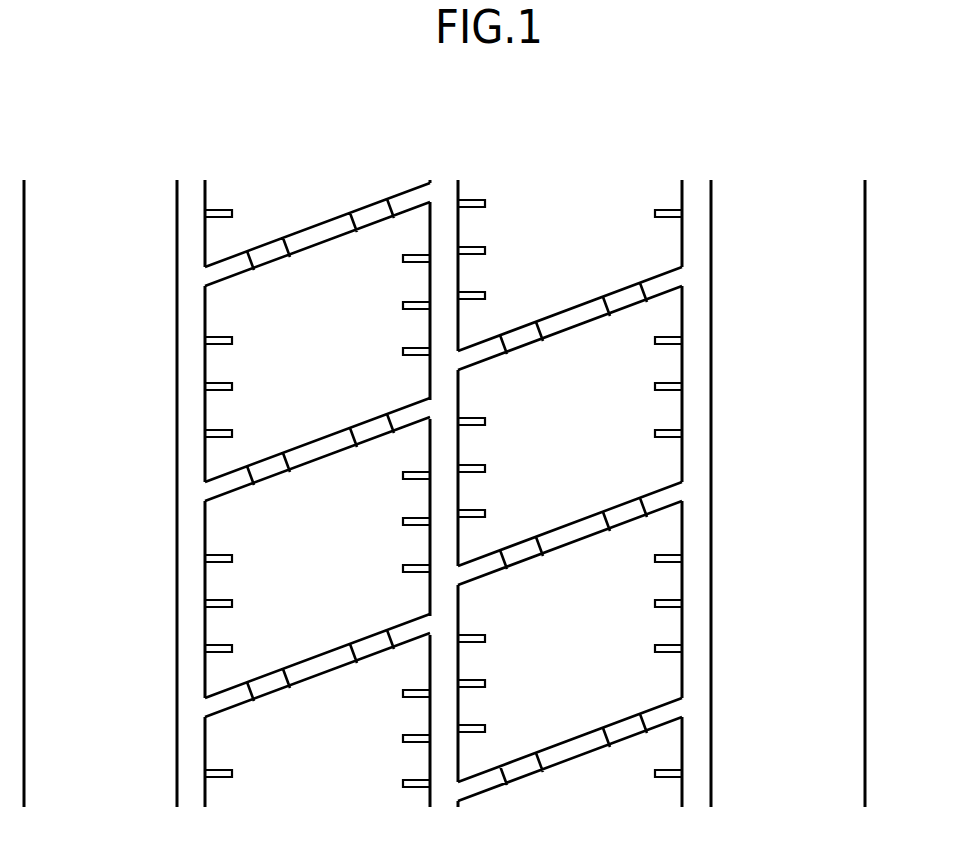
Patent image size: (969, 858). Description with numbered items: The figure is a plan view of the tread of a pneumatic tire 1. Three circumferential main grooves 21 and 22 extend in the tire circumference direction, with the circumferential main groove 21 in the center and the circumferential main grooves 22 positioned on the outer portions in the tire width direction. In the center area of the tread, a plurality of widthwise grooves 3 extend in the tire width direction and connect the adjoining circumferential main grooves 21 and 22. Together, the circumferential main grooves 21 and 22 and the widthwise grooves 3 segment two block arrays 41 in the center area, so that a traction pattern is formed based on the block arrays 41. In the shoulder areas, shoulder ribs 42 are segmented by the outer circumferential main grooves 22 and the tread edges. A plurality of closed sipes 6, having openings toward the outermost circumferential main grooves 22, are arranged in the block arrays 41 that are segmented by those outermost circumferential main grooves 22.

The pneumatic tire 1 is at (856, 120).
The widthwise groove 3 is at (318, 236).
The closed sipe 6 is at (233, 339).
The circumferential main groove 21 is at (442, 192).
The circumferential main groove 22 is at (191, 192).
The block array 41 is at (314, 192).
The shoulder rib 42 is at (100, 192).